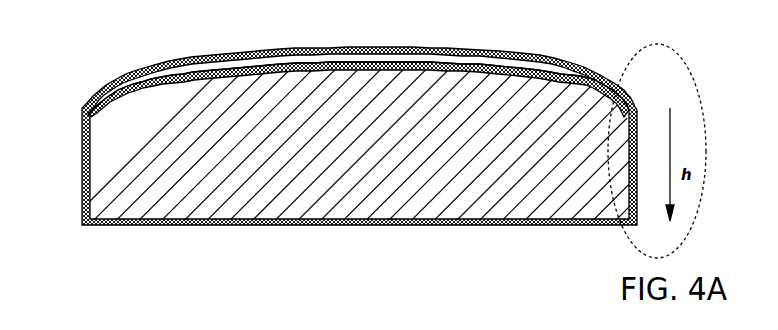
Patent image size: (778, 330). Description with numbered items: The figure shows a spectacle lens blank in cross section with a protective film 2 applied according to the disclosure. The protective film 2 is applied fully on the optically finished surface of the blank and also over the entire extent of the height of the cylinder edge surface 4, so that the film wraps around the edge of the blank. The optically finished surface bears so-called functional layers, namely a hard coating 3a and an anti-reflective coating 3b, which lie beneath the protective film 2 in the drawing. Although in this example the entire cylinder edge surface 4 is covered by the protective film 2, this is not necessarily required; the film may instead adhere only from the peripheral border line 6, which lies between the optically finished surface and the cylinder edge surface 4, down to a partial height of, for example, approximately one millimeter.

The protective film 2 is at (232, 55).
The hard coating 3a is at (321, 72).
The anti-reflective coating 3b is at (277, 64).
The cylinder edge surface 4 is at (107, 161).
The peripheral border line 6 is at (647, 88).